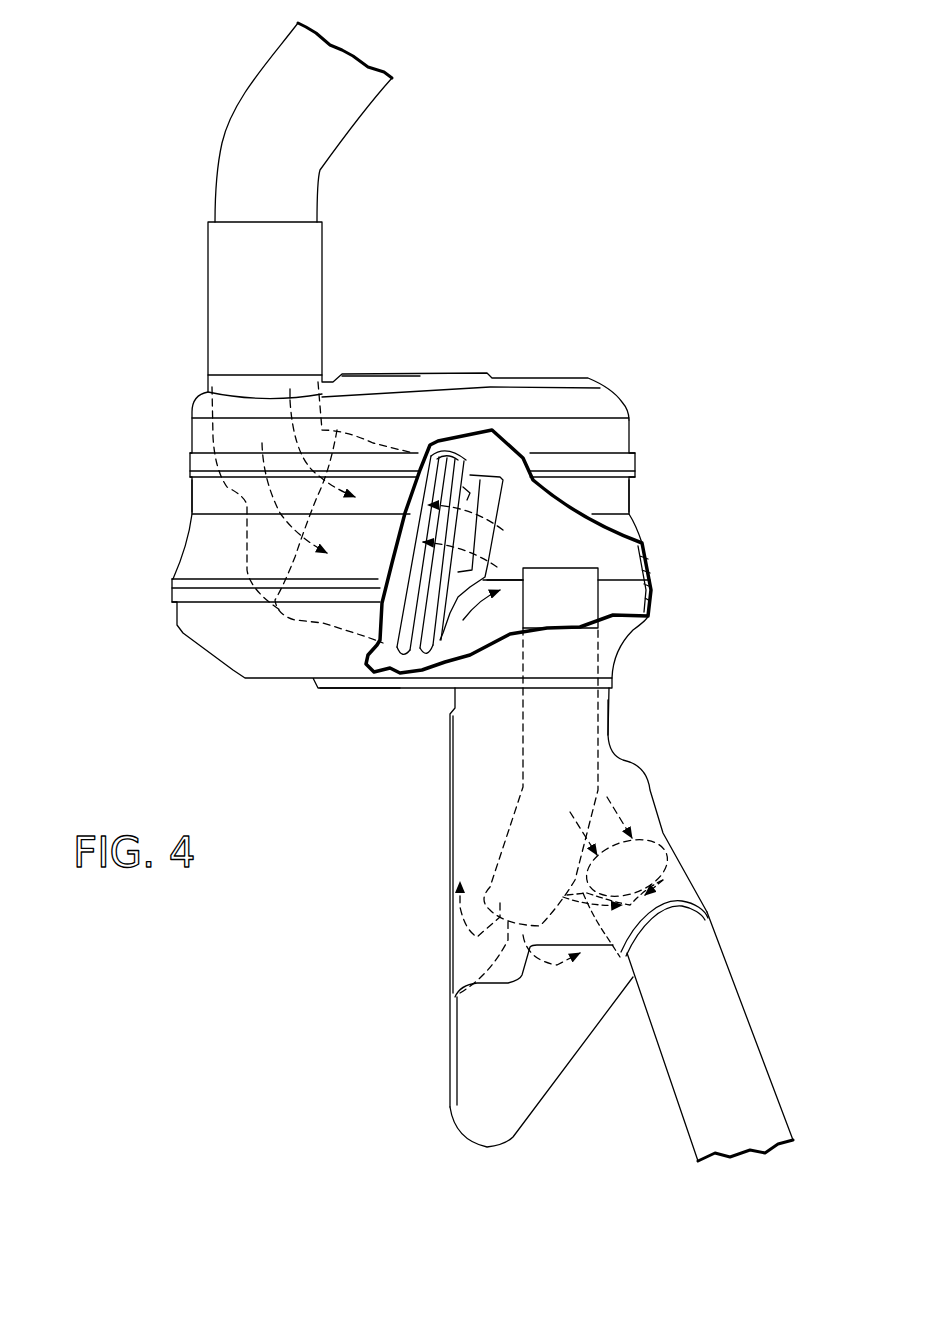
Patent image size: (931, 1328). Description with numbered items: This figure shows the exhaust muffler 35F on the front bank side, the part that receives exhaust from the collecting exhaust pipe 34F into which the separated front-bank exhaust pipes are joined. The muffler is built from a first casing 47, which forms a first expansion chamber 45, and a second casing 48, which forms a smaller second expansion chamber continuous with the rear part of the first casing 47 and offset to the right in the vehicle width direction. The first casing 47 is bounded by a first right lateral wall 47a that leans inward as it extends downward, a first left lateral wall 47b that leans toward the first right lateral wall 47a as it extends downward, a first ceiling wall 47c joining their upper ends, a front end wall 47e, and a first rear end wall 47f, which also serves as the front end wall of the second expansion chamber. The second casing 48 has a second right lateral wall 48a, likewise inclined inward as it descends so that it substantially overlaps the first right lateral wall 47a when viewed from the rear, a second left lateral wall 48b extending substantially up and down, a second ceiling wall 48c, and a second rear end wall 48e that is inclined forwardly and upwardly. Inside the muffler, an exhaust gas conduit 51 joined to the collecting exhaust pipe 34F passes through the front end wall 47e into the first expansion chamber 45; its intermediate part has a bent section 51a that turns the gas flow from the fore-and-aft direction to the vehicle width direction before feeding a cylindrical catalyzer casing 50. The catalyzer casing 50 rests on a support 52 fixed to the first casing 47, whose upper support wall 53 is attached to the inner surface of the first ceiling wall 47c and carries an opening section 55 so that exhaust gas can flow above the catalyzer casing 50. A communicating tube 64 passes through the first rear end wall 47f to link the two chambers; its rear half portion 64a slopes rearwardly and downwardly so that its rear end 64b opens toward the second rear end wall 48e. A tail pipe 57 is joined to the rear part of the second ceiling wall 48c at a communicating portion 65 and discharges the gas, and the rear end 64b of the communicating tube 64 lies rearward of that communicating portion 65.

The collecting exhaust pipe 34F is at (235, 143).
The exhaust muffler 35F is at (616, 393).
The first expansion chamber 45 is at (560, 562).
The first casing 47 is at (633, 489).
The first right lateral wall 47a is at (638, 523).
The first left lateral wall 47b is at (190, 495).
The first ceiling wall 47c is at (590, 503).
The front end wall 47e is at (390, 372).
The first rear end wall 47f is at (295, 681).
The second casing 48 is at (670, 830).
The second right lateral wall 48a is at (610, 733).
The second left lateral wall 48b is at (445, 866).
The second ceiling wall 48c is at (468, 863).
The second rear end wall 48e is at (520, 1070).
The catalyzer casing 50 is at (412, 490).
The exhaust gas conduit 51 is at (207, 440).
The bent section 51a is at (250, 557).
The support 52 is at (396, 612).
The upper support wall 53 is at (497, 513).
The opening section 55 is at (445, 447).
The tail pipe 57 is at (748, 1063).
The communicating tube 64 is at (588, 590).
The rear half portion 64a is at (648, 912).
The rear end 64b is at (455, 998).
The communicating portion 65 is at (680, 870).